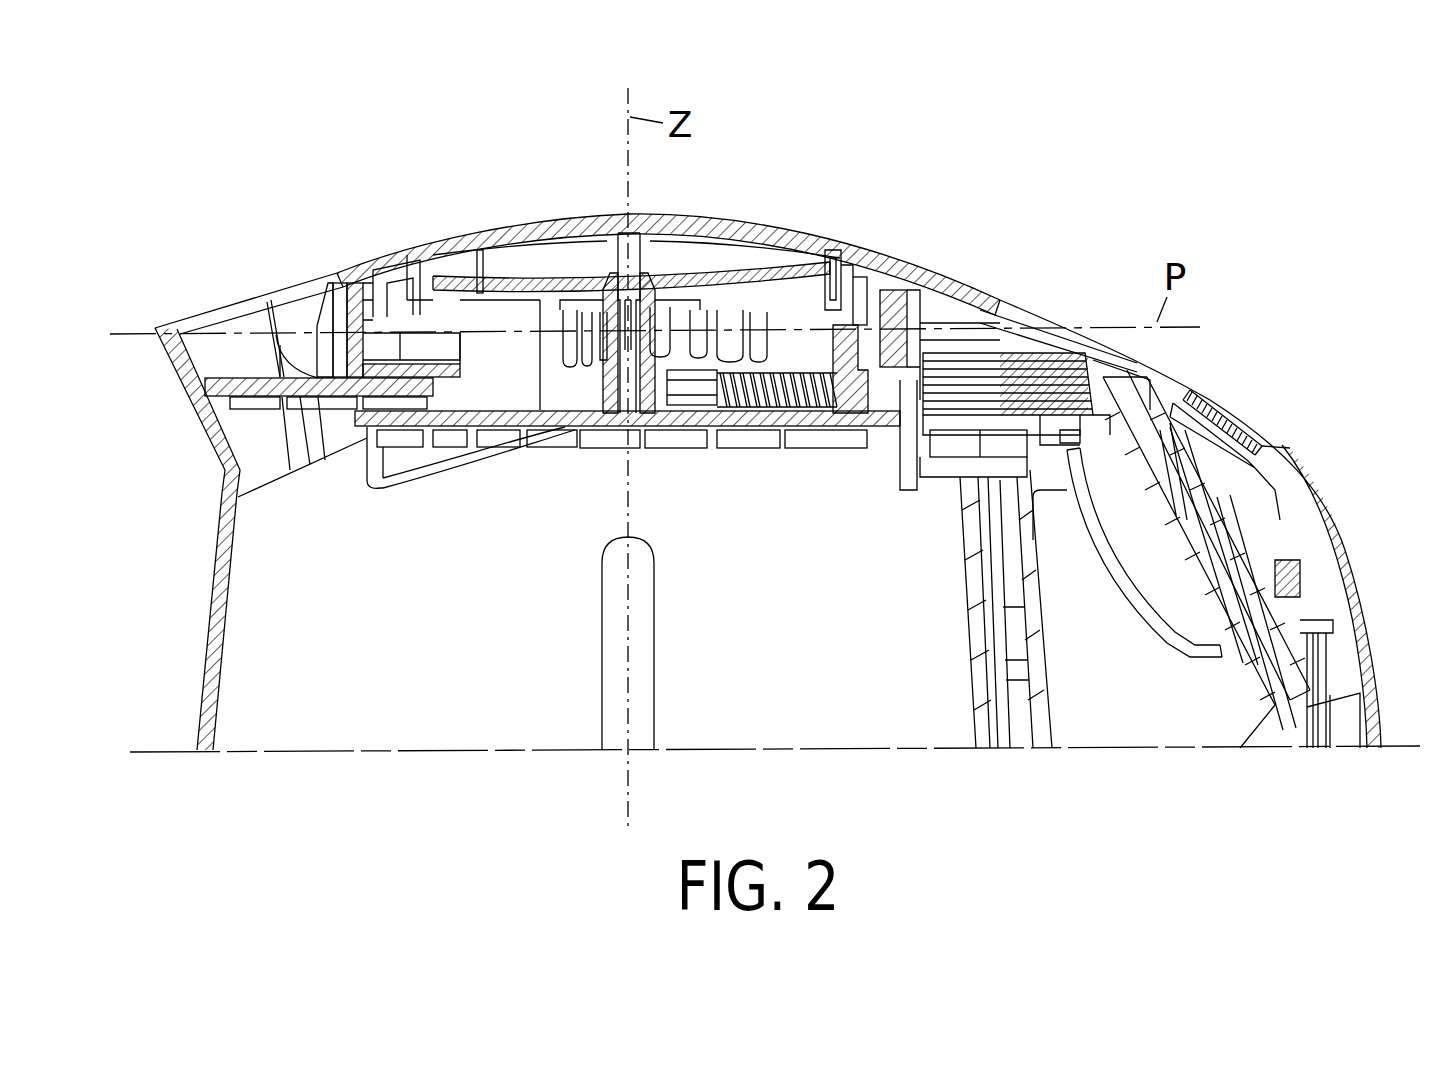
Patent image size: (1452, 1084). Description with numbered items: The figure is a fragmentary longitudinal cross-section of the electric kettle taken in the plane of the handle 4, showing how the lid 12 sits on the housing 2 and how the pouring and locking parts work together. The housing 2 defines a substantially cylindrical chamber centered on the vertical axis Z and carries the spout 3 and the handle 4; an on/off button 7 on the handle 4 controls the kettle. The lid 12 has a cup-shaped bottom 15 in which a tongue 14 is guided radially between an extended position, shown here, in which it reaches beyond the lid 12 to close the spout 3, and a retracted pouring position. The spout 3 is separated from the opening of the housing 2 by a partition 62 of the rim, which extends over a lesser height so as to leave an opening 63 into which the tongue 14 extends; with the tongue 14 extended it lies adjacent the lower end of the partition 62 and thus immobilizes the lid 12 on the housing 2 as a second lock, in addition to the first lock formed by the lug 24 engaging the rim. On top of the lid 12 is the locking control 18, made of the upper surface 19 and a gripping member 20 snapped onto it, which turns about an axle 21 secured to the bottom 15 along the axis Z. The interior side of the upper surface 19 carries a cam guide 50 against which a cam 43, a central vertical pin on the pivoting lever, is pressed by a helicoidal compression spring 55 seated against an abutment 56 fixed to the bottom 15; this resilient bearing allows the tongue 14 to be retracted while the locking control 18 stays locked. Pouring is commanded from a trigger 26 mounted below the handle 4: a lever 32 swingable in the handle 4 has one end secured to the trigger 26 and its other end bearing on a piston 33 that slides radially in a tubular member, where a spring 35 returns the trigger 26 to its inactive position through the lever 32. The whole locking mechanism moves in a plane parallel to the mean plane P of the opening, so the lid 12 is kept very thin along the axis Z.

The housing 2 is at (200, 630).
The spout 3 is at (190, 373).
The handle 4 is at (1362, 597).
The on/off button 7 is at (1282, 452).
The lid 12 is at (568, 432).
The tongue 14 is at (267, 396).
The bottom 15 is at (463, 432).
The locking control 18 is at (478, 228).
The upper surface 19 is at (387, 265).
The gripping member 20 is at (567, 221).
The axle 21 is at (650, 293).
The lug 24 is at (893, 402).
The trigger 26 is at (1127, 583).
The lever 32 is at (1200, 640).
The piston 33 is at (1060, 380).
The spring 35 is at (1003, 373).
The cam 43 is at (837, 297).
The cam guide 50 is at (847, 313).
The helicoidal compression spring 55 is at (780, 385).
The abutment 56 is at (705, 400).
The partition 62 is at (338, 322).
The opening 63 is at (282, 380).